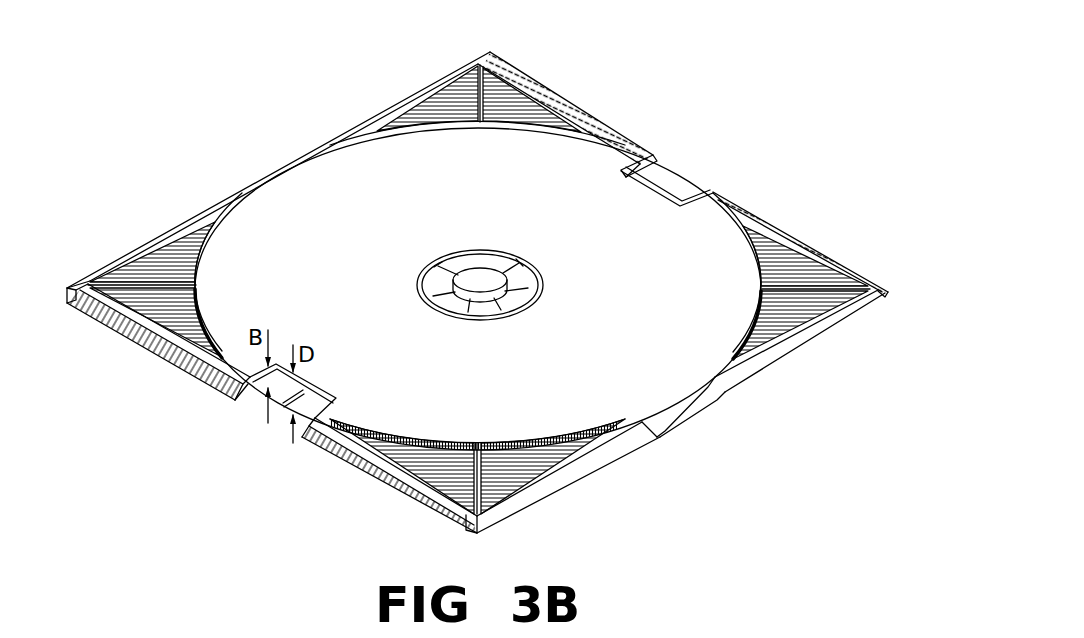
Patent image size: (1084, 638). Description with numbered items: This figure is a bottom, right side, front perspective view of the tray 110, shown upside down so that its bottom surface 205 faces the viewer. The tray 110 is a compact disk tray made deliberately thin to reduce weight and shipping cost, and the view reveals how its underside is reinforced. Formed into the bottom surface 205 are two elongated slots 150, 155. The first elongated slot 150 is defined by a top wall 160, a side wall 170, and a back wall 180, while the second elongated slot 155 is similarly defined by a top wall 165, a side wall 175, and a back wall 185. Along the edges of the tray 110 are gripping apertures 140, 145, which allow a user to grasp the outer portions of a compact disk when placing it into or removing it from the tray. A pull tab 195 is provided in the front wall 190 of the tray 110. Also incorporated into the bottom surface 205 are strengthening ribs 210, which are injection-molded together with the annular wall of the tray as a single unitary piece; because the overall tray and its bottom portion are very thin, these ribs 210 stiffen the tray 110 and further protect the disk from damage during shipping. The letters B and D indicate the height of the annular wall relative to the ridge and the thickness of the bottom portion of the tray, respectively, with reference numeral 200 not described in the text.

The tray 110 is at (332, 104).
The gripping aperture 140 is at (258, 401).
The gripping aperture 145 is at (672, 181).
The elongated slot 150 is at (893, 302).
The elongated slot 155 is at (484, 535).
The top wall 160 is at (590, 113).
The top wall 165 is at (167, 362).
The side wall 170 is at (811, 244).
The side wall 175 is at (360, 472).
The back wall 180 is at (494, 58).
The back wall 185 is at (88, 305).
The front wall 190 is at (588, 462).
The pull tab 195 is at (688, 408).
The side wall 200 is at (167, 233).
The bottom surface 205 is at (499, 394).
The strengthening ribs 210 is at (180, 283).